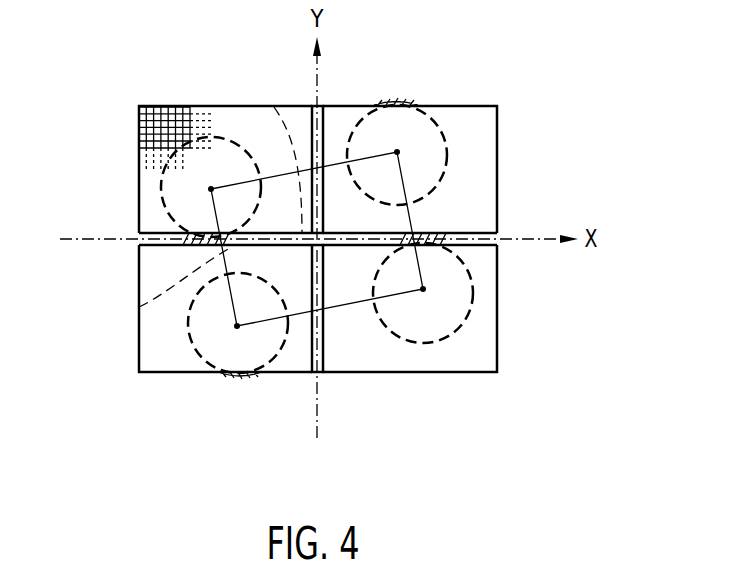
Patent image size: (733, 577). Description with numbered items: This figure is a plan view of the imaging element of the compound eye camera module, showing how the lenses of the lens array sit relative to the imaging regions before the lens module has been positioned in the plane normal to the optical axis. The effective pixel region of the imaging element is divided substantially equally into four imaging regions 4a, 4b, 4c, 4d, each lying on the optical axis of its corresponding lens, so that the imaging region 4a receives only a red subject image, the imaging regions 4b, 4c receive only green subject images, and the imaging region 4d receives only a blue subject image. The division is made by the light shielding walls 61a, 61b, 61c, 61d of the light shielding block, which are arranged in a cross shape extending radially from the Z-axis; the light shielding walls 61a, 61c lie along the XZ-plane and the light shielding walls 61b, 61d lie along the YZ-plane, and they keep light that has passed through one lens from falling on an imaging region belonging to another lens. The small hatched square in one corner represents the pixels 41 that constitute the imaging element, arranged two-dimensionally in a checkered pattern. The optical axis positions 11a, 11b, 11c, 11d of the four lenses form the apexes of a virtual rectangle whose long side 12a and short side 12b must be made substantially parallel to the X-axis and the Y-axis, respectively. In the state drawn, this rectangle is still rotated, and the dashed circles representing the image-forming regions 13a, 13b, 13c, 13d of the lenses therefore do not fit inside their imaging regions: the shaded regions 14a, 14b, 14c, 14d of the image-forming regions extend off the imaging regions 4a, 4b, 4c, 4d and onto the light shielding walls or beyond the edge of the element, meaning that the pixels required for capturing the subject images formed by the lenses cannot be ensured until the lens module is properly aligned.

The imaging region 4a is at (480, 133).
The imaging region 4b is at (480, 347).
The imaging region 4c is at (243, 118).
The imaging region 4d is at (157, 360).
The optical axis position 11a is at (397, 152).
The optical axis position 11b is at (423, 289).
The optical axis position 11c is at (211, 189).
The optical axis position 11d is at (237, 326).
The long side 12a is at (274, 107).
The short side 12b is at (139, 307).
The image-forming region 13a is at (449, 160).
The image-forming region 13b is at (472, 305).
The image-forming region 13c is at (162, 205).
The image-forming region 13d is at (190, 345).
The shaded region 14a is at (399, 94).
The shaded region 14b is at (480, 262).
The shaded region 14c is at (180, 236).
The shaded region 14d is at (240, 375).
The pixels 41 is at (152, 107).
The light shielding wall 61a is at (490, 232).
The light shielding wall 61b is at (327, 350).
The light shielding wall 61c is at (139, 245).
The light shielding wall 61d is at (320, 107).